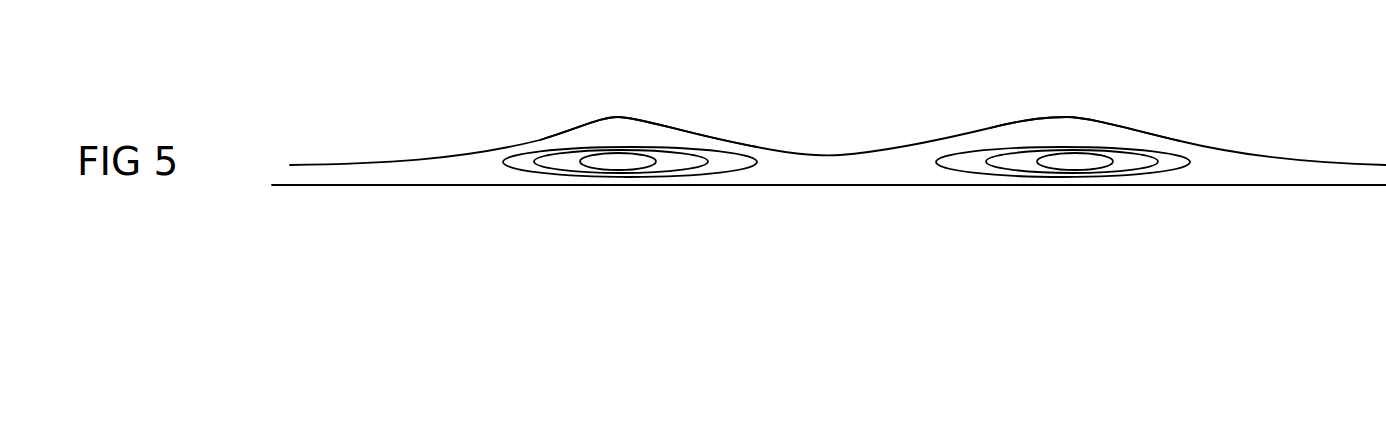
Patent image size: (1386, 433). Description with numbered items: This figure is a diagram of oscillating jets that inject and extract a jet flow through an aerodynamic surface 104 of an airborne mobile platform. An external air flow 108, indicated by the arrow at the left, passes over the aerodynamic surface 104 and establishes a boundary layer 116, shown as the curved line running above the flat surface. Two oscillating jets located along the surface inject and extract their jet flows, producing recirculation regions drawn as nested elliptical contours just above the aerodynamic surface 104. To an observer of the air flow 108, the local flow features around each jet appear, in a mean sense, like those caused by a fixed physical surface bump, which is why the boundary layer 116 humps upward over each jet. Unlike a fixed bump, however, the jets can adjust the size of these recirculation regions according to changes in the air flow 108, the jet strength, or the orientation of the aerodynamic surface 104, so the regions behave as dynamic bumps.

The aerodynamic surface 104 is at (785, 185).
The external air flow 108 is at (320, 120).
The boundary layer 116 is at (475, 158).